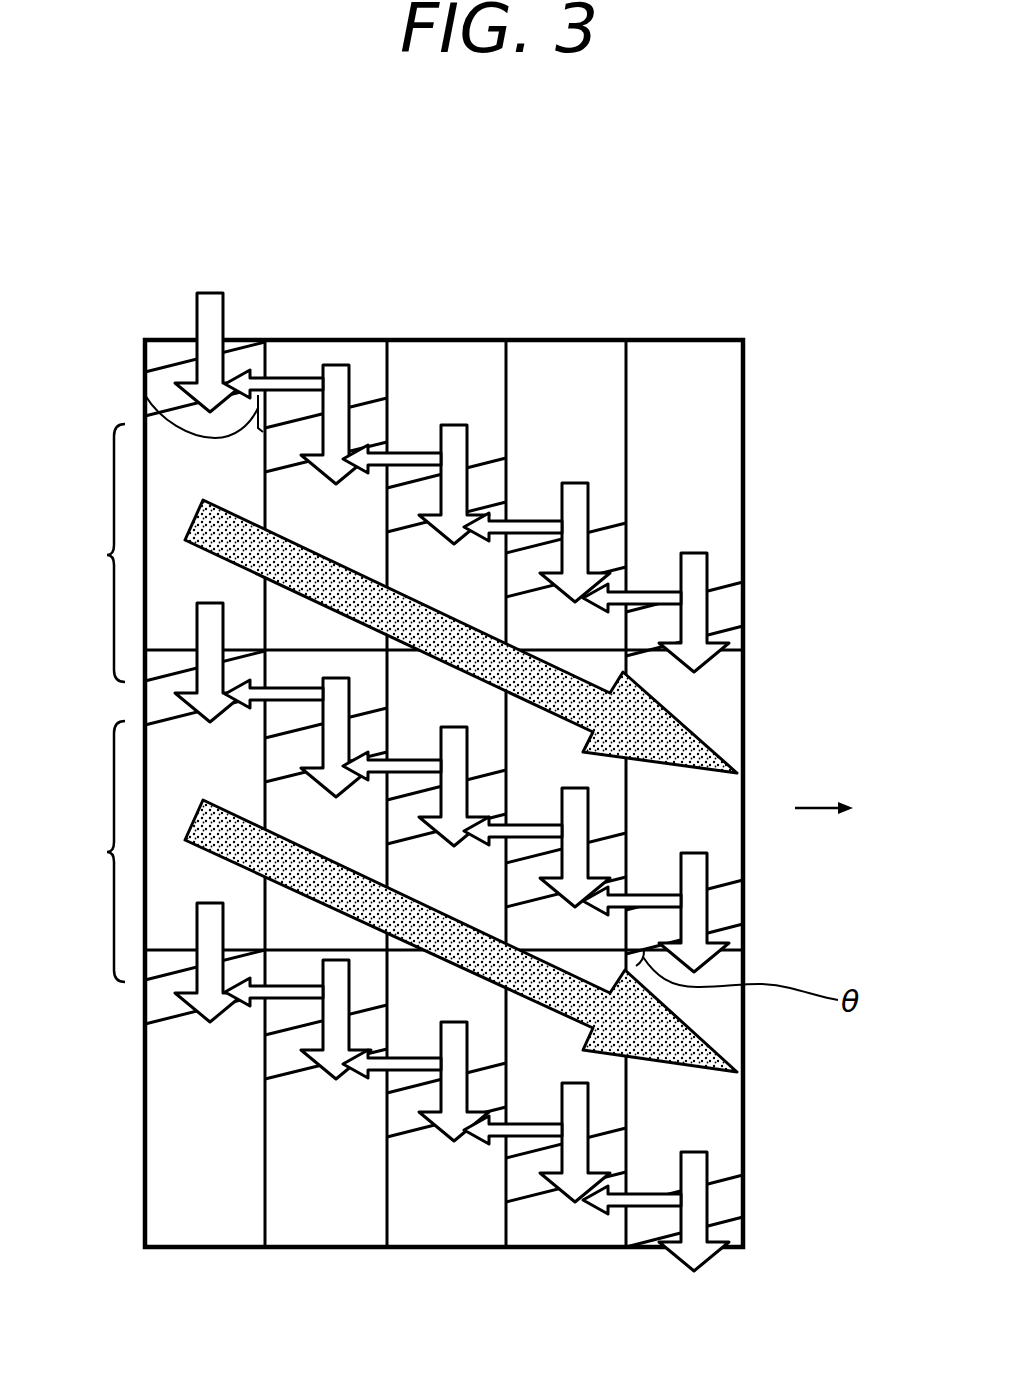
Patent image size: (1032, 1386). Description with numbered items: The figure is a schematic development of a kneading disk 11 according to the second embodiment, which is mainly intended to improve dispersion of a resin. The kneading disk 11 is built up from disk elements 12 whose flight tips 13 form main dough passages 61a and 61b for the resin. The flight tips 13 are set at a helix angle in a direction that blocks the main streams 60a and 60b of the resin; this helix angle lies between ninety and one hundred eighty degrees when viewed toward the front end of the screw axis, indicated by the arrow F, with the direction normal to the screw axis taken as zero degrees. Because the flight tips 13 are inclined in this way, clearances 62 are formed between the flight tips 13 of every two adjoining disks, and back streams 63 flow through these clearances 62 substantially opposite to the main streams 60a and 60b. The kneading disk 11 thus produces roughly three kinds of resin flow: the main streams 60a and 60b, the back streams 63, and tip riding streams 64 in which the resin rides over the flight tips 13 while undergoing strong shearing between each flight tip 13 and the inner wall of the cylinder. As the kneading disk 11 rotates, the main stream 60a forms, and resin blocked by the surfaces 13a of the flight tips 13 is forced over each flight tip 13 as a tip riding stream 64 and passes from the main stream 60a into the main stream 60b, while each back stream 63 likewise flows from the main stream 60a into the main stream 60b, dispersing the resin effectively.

The kneading disk 11 is at (605, 210).
The disk element 12 is at (708, 332).
The flight tip 13 is at (508, 794).
The surface of flight tip 13a is at (728, 583).
The main stream 60a is at (700, 737).
The main stream 60b is at (713, 1050).
The main dough passage 61a is at (86, 553).
The main dough passage 61b is at (86, 851).
The clearance 62 is at (145, 395).
The back stream 63 is at (290, 375).
The tip riding stream 64 is at (212, 290).
The arrow indicating direction of the front end of the screw axis F is at (836, 809).